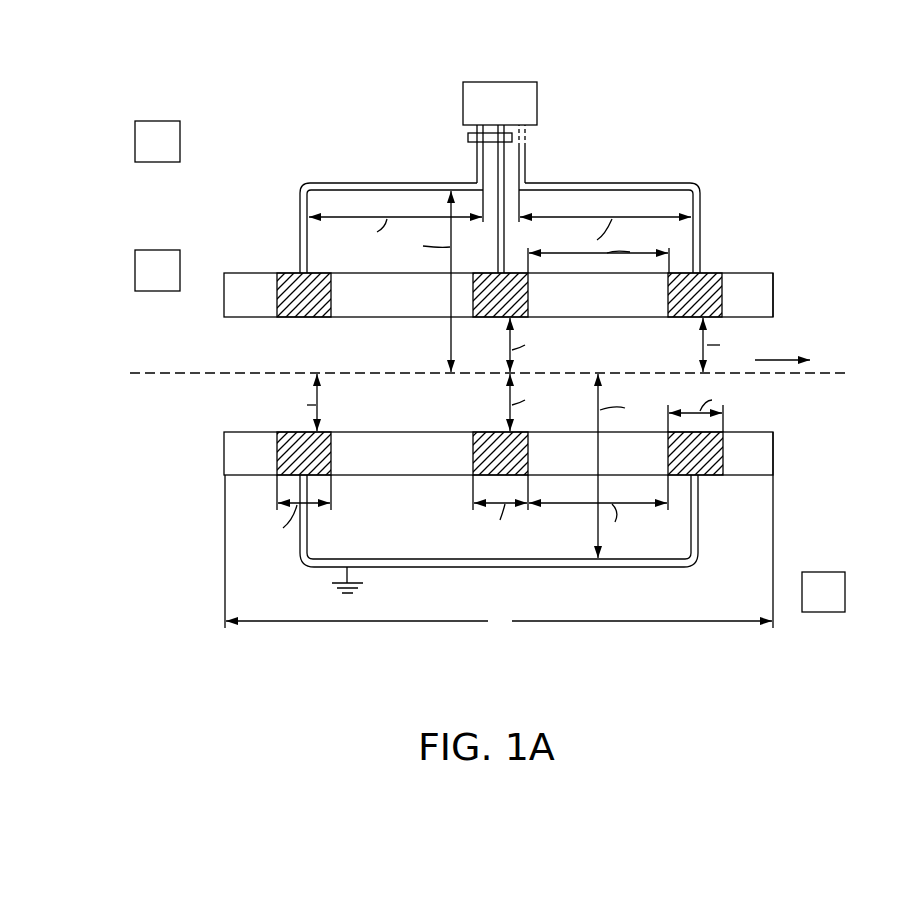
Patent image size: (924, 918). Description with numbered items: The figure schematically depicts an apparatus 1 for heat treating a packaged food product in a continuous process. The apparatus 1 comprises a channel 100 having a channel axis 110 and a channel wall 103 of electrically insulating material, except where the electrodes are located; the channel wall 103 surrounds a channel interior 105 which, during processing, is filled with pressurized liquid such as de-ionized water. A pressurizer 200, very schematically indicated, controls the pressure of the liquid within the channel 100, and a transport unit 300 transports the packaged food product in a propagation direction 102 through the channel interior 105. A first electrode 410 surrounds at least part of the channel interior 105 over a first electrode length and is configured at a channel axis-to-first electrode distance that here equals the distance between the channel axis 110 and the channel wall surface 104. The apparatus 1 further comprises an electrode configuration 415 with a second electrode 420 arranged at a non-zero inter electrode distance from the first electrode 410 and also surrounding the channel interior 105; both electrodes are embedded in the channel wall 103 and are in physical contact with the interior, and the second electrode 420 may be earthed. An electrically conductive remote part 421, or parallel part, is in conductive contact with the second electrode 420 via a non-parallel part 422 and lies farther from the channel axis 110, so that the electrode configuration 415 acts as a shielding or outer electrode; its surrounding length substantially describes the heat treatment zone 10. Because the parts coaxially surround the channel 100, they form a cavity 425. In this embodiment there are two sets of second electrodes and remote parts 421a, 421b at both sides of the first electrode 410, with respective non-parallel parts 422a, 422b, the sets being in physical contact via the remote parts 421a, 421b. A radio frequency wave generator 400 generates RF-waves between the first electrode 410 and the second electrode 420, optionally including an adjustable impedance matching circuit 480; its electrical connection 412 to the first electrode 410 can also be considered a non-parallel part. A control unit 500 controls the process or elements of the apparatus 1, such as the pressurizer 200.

The apparatus 1 is at (803, 62).
The heat treatment zone 10 is at (572, 415).
The channel 100 is at (290, 425).
The propagation direction 102 is at (777, 358).
The channel wall 103 is at (240, 282).
The channel wall surface 104 is at (755, 318).
The channel interior 105 is at (232, 400).
The channel axis 110 is at (822, 377).
The pressurizer 200 is at (188, 125).
The transport unit 300 is at (183, 237).
The radio frequency wave generator 400 is at (549, 83).
The first electrode 410 is at (518, 320).
The electrical connection 412 is at (497, 160).
The electrode configuration 415 is at (570, 166).
The second electrode 420 is at (318, 282).
The electrically conductive remote part 421 is at (637, 182).
The electrically conductive remote part 421a is at (688, 182).
The electrically conductive remote part 421b is at (402, 175).
The non-parallel part 422 is at (702, 207).
The non-parallel part 422a is at (702, 237).
The non-parallel part 422b is at (302, 213).
The cavity 425 is at (332, 203).
The adjustable impedance matching circuit 480 is at (457, 131).
The control unit 500 is at (857, 579).